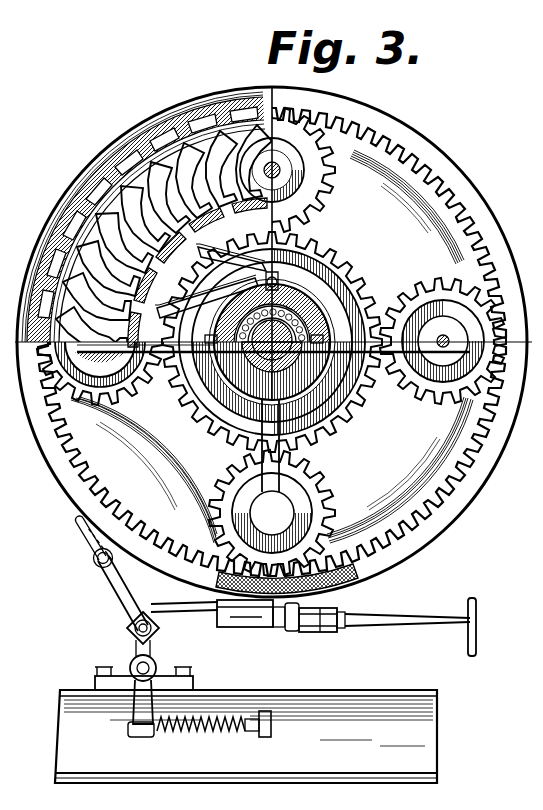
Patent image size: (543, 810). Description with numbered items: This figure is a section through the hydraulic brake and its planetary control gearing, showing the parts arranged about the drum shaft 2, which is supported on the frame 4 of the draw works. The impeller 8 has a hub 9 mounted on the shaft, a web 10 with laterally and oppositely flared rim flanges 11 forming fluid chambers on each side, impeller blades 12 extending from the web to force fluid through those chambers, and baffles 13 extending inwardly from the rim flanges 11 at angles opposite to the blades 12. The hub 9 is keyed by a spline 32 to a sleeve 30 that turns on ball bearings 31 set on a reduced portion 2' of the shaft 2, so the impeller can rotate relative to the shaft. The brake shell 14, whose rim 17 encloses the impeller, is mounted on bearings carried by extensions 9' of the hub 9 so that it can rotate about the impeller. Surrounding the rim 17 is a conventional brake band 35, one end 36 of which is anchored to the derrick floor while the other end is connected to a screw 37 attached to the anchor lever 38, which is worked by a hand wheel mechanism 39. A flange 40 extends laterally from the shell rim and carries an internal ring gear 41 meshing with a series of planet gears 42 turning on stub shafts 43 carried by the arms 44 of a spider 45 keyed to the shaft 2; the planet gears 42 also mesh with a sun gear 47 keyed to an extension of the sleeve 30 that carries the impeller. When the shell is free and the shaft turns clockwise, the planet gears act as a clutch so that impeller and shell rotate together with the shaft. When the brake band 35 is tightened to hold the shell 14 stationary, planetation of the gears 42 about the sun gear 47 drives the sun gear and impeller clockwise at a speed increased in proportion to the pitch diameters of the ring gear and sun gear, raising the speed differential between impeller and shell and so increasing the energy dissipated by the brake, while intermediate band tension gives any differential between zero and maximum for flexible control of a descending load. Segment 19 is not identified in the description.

The shaft 2 is at (273, 418).
The reduced portion of the shaft 2' is at (298, 326).
The frame 4 is at (284, 690).
The impeller 8 is at (92, 178).
The hub 9 is at (282, 311).
The extensions on the impeller hub 9' is at (248, 328).
The web 10 is at (110, 252).
The rim flanges 11 is at (183, 122).
The impeller blades 12 is at (204, 284).
The baffles 13 is at (130, 148).
The brake shell 14 is at (264, 97).
The rim 17 is at (56, 222).
The segment 19 is at (157, 282).
The sleeve 30 is at (214, 294).
The ball bearings 31 is at (176, 396).
The spline 32 is at (264, 272).
The brake band 35 is at (232, 98).
The end of brake band 36 is at (80, 536).
The screw 37 is at (281, 630).
The anchor lever 38 is at (162, 622).
The hand wheel mechanism 39 is at (468, 614).
The flange 40 is at (420, 140).
The internal ring gear 41 is at (424, 188).
The planet gears 42 is at (305, 180).
The stub shafts 43 is at (285, 165).
The arms 44 is at (304, 472).
The spider 45 is at (216, 442).
The sun gear 47 is at (374, 296).